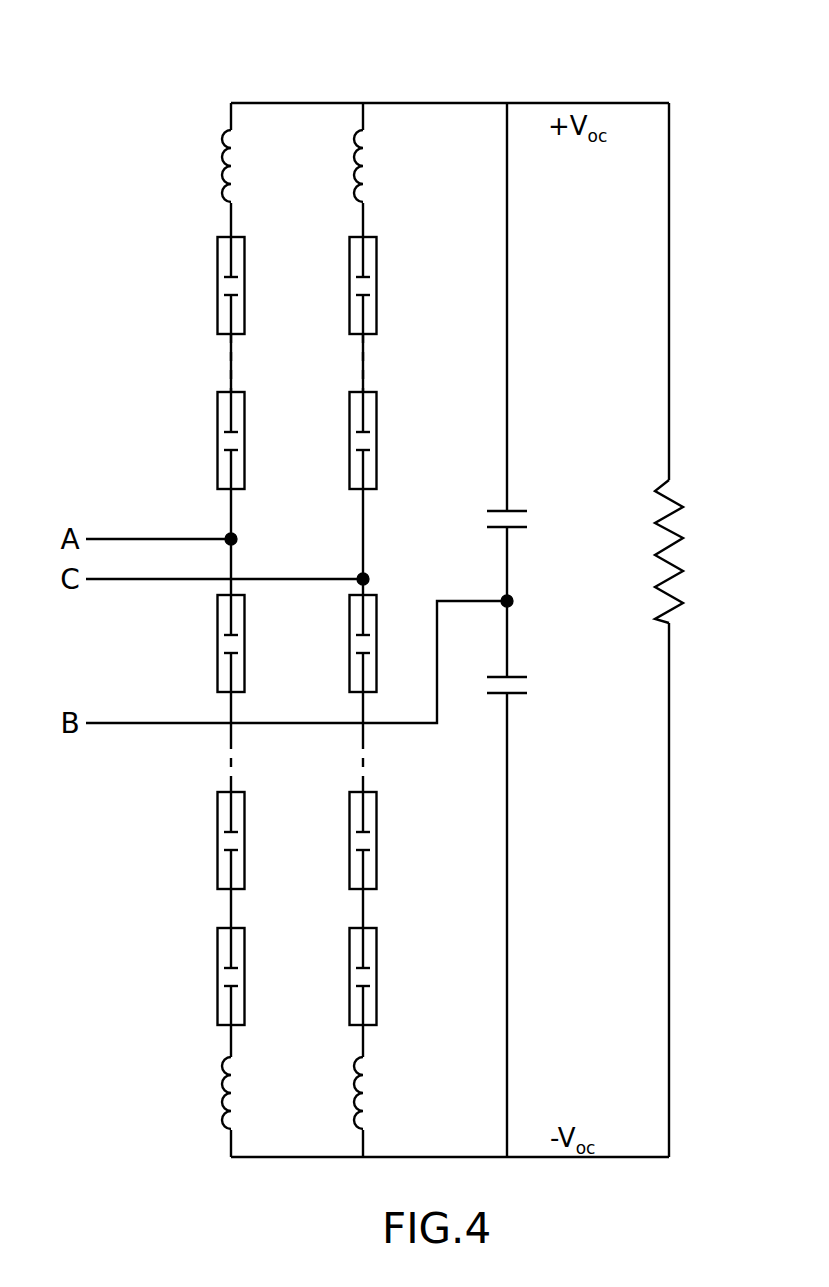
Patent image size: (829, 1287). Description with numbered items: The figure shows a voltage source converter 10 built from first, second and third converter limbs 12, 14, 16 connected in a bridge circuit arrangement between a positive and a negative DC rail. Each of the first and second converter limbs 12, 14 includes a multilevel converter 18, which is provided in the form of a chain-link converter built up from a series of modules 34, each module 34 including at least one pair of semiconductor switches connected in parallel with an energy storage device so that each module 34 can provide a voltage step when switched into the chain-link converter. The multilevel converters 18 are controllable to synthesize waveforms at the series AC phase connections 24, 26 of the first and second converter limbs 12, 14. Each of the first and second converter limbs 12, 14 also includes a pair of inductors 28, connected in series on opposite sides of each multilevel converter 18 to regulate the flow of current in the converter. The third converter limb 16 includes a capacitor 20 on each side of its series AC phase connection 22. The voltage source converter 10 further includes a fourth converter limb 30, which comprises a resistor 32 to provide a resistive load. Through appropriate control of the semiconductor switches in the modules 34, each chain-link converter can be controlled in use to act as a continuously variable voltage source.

The voltage source converter 10 is at (110, 197).
The first converter limb 12 is at (233, 90).
The second converter limb 14 is at (365, 90).
The third converter limb 16 is at (509, 90).
The multilevel converter 18 is at (190, 447).
The capacitor 20 is at (528, 519).
The series AC phase connection 22 is at (514, 600).
The series AC phase connection 24 is at (238, 537).
The series AC phase connection 26 is at (370, 577).
The inductor 28 is at (222, 162).
The fourth converter limb 30 is at (671, 90).
The resistor 32 is at (670, 497).
The module 34 is at (217, 324).